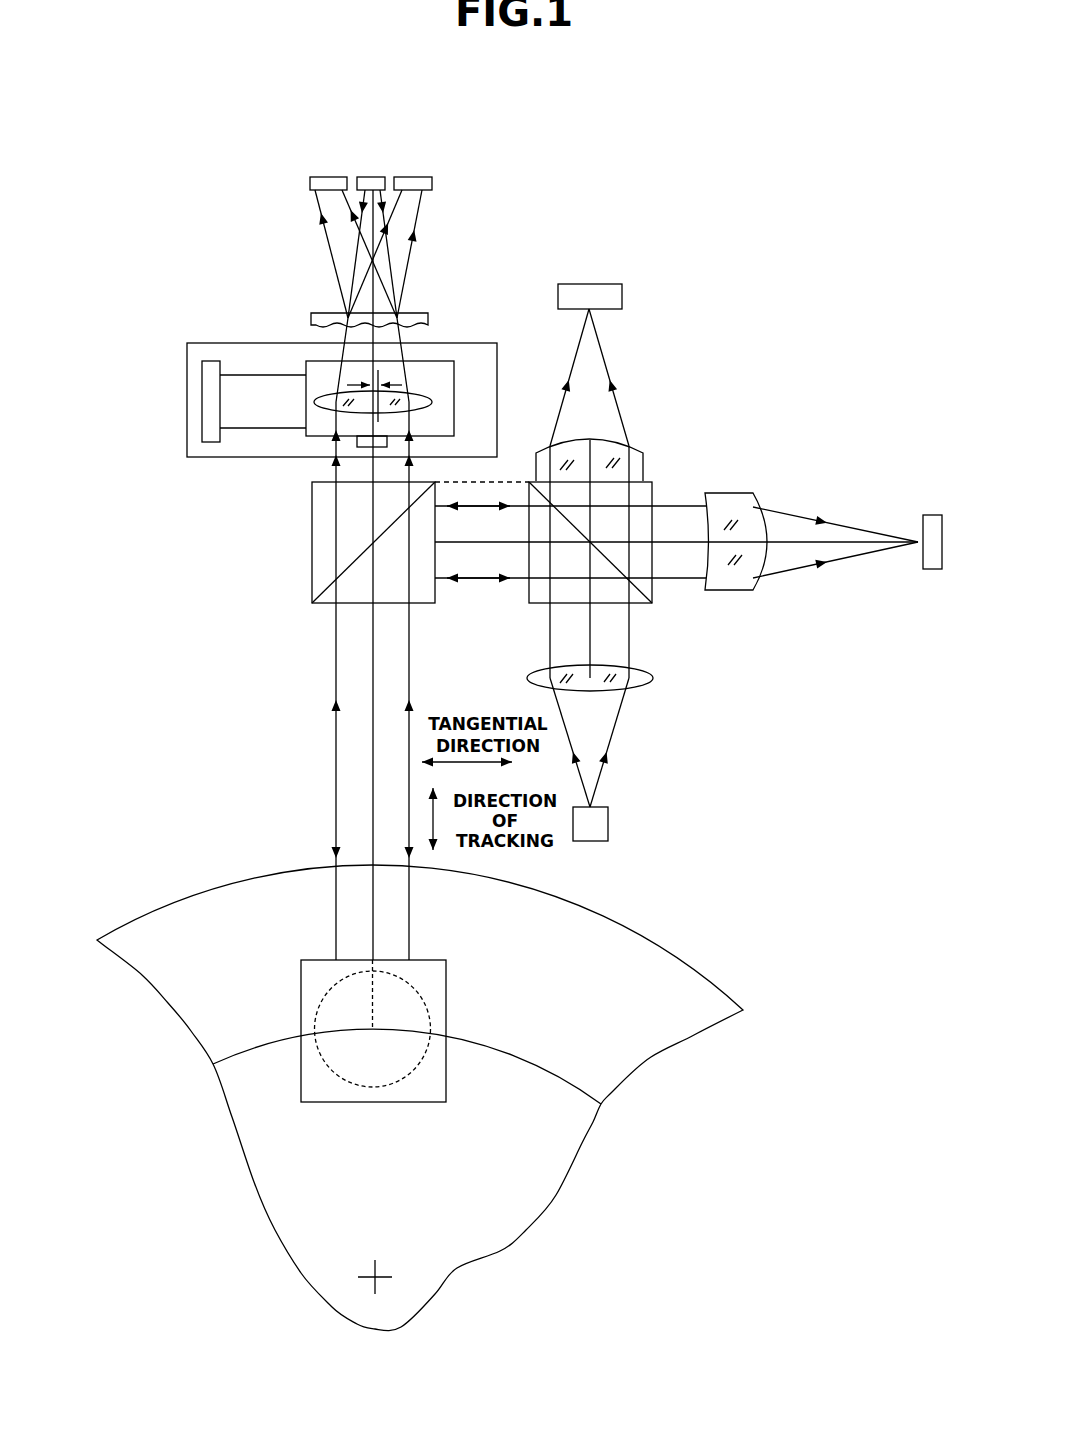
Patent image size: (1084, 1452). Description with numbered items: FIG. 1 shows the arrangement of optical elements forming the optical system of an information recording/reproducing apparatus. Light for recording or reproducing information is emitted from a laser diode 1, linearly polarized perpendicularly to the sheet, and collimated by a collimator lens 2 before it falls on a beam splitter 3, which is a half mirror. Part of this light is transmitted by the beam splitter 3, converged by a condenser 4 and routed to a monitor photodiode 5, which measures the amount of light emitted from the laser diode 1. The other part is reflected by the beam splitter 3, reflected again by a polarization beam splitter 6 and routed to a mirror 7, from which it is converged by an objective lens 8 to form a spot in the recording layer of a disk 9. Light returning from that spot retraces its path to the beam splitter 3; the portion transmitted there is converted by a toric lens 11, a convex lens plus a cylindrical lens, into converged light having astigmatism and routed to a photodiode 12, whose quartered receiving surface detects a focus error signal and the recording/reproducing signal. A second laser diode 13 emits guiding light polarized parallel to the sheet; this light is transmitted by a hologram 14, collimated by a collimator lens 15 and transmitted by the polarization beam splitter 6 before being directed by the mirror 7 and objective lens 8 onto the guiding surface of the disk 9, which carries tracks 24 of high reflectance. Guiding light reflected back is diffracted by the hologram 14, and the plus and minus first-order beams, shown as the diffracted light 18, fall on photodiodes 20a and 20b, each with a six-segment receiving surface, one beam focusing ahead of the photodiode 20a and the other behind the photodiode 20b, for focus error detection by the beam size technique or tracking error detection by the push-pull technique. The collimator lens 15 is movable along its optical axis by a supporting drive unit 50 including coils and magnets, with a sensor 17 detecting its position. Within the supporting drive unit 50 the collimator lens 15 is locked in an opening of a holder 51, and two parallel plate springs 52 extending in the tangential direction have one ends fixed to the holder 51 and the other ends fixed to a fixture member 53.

The laser diode 1 is at (608, 825).
The collimator lens 2 is at (653, 678).
The beam splitter 3 is at (652, 490).
The condenser 4 is at (643, 460).
The monitor photodiode 5 is at (622, 296).
The polarization beam splitter 6 is at (312, 573).
The mirror 7 is at (446, 972).
The objective lens 8 is at (340, 1079).
The disk 9 is at (629, 925).
The toric lens 11 is at (737, 493).
The photodiode 12 is at (932, 515).
The laser diode 13 is at (371, 177).
The hologram 14 is at (422, 312).
The collimator lens 15 is at (410, 400).
The sensor 17 is at (357, 448).
The diffracted light beams 18 is at (372, 310).
The photodiode 20a is at (323, 177).
The photodiode 20b is at (413, 177).
The tracks 24 is at (547, 1070).
The supporting drive unit 50 is at (497, 373).
The holder 51 is at (313, 438).
The parallel plate springs 52 is at (243, 375).
The fixture member 53 is at (210, 443).